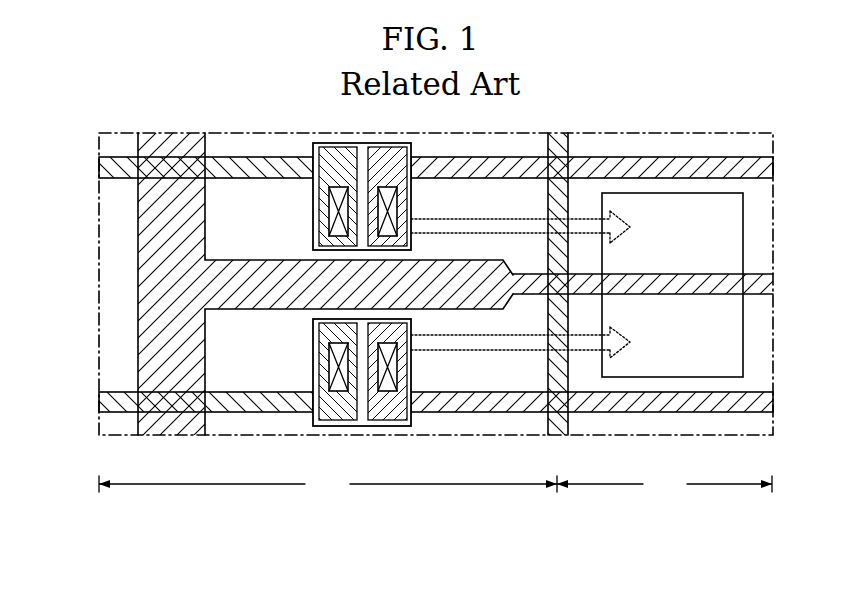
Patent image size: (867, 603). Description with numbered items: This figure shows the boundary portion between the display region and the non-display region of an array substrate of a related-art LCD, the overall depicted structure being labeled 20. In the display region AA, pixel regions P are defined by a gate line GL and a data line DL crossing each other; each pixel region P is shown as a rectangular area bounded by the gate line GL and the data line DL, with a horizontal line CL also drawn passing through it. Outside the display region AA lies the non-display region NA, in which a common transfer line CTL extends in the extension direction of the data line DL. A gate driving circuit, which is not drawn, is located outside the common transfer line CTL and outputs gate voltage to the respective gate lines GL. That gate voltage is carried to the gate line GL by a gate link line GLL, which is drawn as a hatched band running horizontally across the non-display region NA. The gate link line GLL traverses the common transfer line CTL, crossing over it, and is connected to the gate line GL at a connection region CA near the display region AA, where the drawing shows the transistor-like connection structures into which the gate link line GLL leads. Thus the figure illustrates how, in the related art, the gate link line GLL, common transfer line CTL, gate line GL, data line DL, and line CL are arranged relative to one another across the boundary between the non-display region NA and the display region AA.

The liquid crystal display panel pixel 20 is at (413, 592).
The gate link line GLL is at (118, 171).
The gate line GL is at (765, 171).
The common transfer line CTL is at (138, 352).
The common line CL is at (765, 285).
The data line DL is at (566, 146).
The pixel region P is at (680, 320).
The connection region CA is at (303, 188).
The non-display region NA is at (328, 484).
The display region AA is at (664, 484).